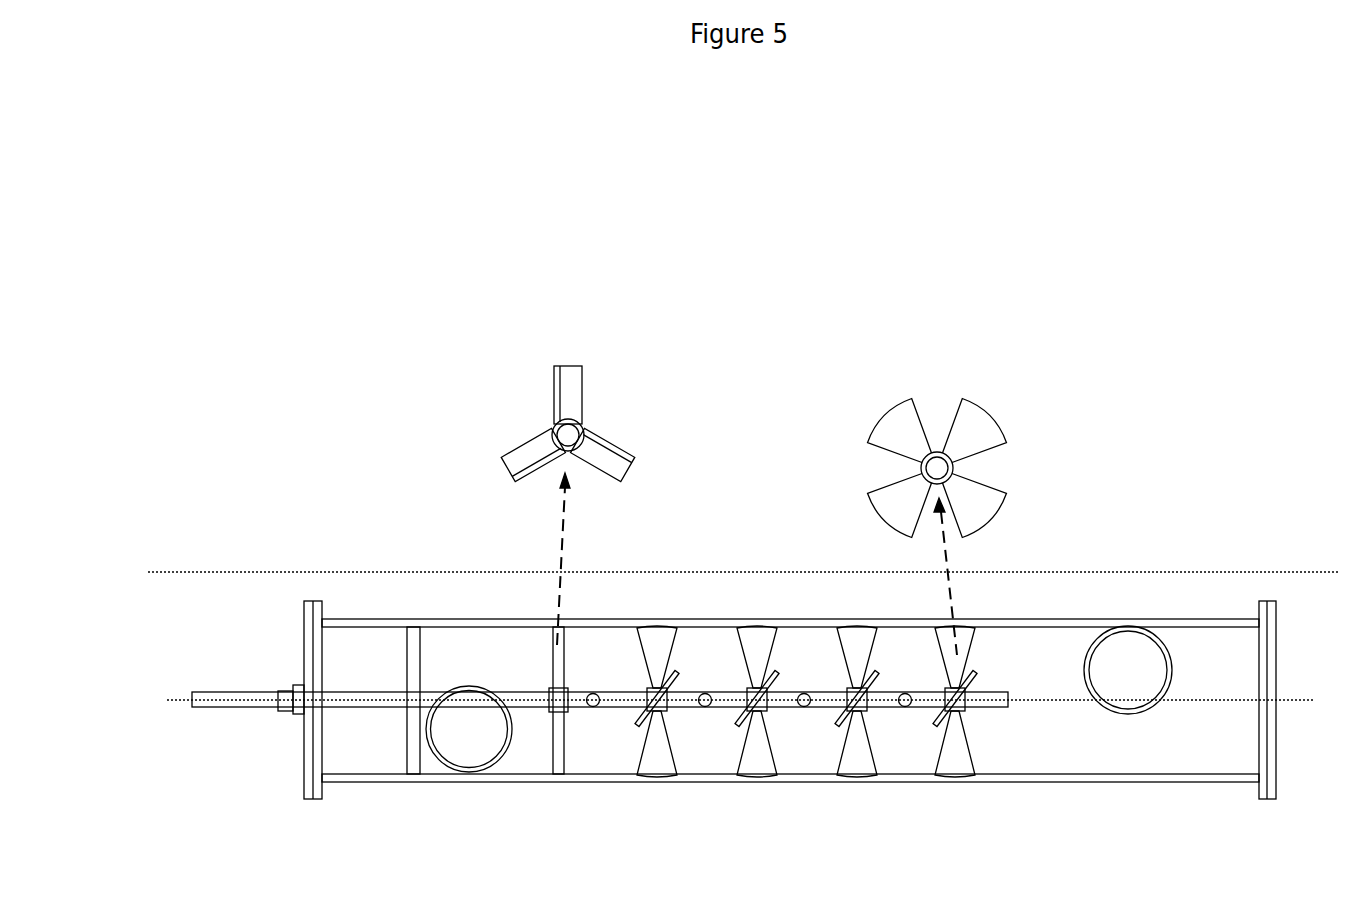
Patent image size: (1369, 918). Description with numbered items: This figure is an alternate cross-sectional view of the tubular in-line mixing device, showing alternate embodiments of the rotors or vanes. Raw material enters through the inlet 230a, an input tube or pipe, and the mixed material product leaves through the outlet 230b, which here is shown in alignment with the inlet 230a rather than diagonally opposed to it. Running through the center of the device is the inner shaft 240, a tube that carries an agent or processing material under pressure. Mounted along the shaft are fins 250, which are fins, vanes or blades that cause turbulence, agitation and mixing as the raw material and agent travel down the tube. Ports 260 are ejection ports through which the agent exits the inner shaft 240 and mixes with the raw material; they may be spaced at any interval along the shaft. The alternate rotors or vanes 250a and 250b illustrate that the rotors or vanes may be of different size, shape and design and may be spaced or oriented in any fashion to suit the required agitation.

The inlet 230a is at (477, 760).
The outlet 230b is at (1120, 633).
The inner shaft 240 is at (230, 707).
The fins 250 is at (557, 747).
The alternate rotor or vane 250a is at (598, 390).
The alternate rotor or vane 250b is at (937, 393).
The ports 260 is at (907, 705).